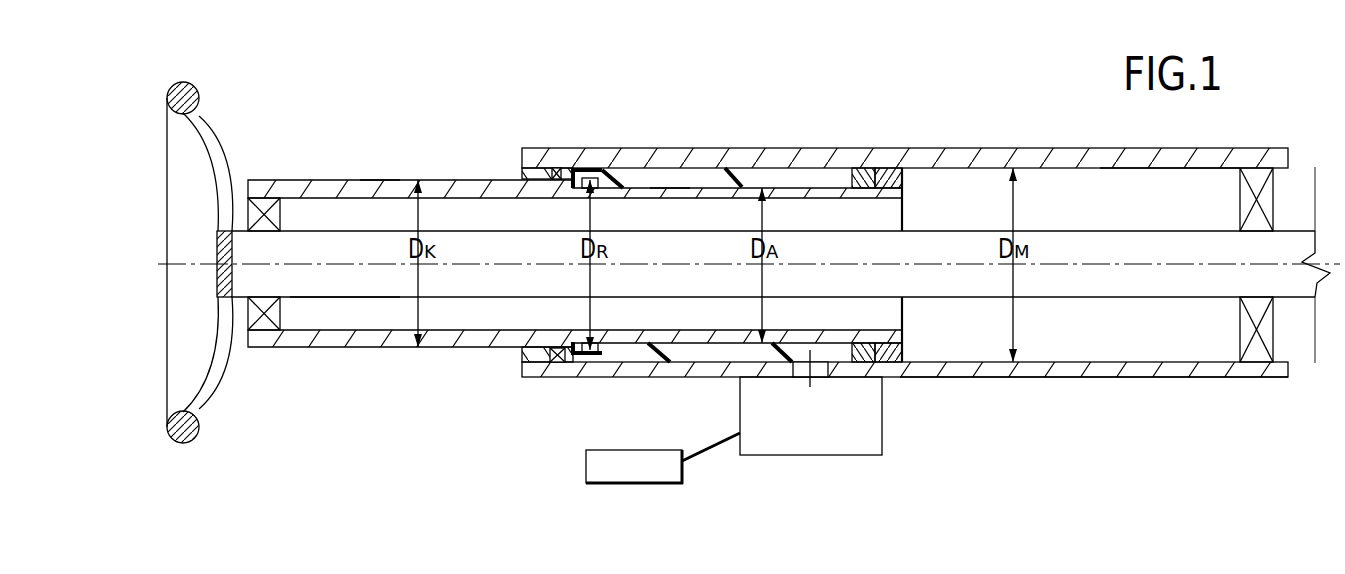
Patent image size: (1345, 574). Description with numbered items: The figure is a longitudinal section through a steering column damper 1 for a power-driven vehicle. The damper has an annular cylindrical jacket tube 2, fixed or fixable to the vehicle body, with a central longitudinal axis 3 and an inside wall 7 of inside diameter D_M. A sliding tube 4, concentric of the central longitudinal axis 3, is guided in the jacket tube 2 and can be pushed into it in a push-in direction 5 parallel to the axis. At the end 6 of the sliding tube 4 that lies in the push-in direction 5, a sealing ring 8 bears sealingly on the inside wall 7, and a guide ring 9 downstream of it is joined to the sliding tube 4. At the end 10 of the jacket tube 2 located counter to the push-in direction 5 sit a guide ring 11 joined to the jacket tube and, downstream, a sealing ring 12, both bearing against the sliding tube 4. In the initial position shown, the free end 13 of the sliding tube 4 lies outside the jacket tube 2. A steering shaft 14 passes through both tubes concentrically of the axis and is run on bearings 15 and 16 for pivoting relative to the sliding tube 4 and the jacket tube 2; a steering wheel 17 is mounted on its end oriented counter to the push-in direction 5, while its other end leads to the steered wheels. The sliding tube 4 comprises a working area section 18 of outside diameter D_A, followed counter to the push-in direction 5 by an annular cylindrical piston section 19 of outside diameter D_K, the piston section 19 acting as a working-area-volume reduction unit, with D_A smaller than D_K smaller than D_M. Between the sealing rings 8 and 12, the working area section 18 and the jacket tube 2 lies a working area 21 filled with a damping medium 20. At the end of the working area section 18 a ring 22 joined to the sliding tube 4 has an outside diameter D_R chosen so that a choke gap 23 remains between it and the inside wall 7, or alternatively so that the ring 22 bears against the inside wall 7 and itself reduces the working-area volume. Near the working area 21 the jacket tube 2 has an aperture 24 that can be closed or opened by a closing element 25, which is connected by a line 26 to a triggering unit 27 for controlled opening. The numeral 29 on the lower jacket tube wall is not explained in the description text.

The steering column damper 1 is at (664, 125).
The jacket tube 2 is at (1075, 146).
The central longitudinal axis 3 is at (1079, 265).
The sliding tube 4 is at (347, 168).
The push-in direction 5 is at (925, 126).
The end of the sliding tube 6 is at (903, 213).
The inside wall 7 is at (1148, 172).
The sealing ring 8 is at (862, 170).
The guide ring 9 is at (889, 170).
The end of the jacket tube 10 is at (530, 153).
The guide ring 11 is at (520, 364).
The sealing ring 12 is at (563, 355).
The free end of the sliding tube 13 is at (252, 185).
The steering shaft 14 is at (346, 284).
The bearing 15 is at (266, 318).
The bearing 16 is at (1255, 350).
The steering wheel 17 is at (186, 430).
The working area section 18 is at (662, 192).
The piston section 19 is at (382, 187).
The damping medium 20 is at (740, 166).
The working area 21 is at (798, 173).
The ring 22 is at (585, 190).
The choke gap 23 is at (585, 170).
The aperture 24 is at (818, 365).
The closing element 25 is at (800, 445).
The line 26 is at (713, 452).
The triggering unit 27 is at (634, 466).
The outer tube bottom wall 29 is at (1089, 378).